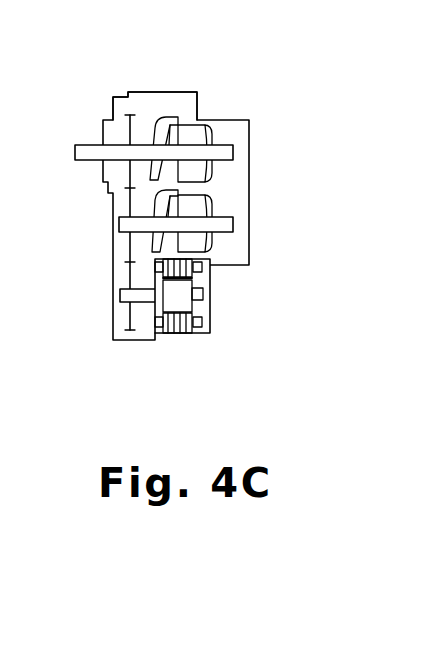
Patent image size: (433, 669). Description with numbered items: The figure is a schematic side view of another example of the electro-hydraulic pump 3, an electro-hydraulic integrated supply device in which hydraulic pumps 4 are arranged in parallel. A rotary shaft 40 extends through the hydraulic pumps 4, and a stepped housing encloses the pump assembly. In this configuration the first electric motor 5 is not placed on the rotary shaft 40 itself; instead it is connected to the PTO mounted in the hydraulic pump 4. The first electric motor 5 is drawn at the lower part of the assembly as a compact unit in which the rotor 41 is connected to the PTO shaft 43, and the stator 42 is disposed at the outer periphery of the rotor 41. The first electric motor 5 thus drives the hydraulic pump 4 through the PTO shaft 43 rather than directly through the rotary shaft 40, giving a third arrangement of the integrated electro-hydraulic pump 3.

The electro-hydraulic pump 3 is at (284, 143).
The hydraulic pump 4 is at (186, 90).
The rotary shaft 40 is at (85, 143).
The first electric motor 5 is at (219, 347).
The rotor 41 is at (181, 306).
The stator 42 is at (173, 333).
The PTO shaft 43 is at (203, 294).